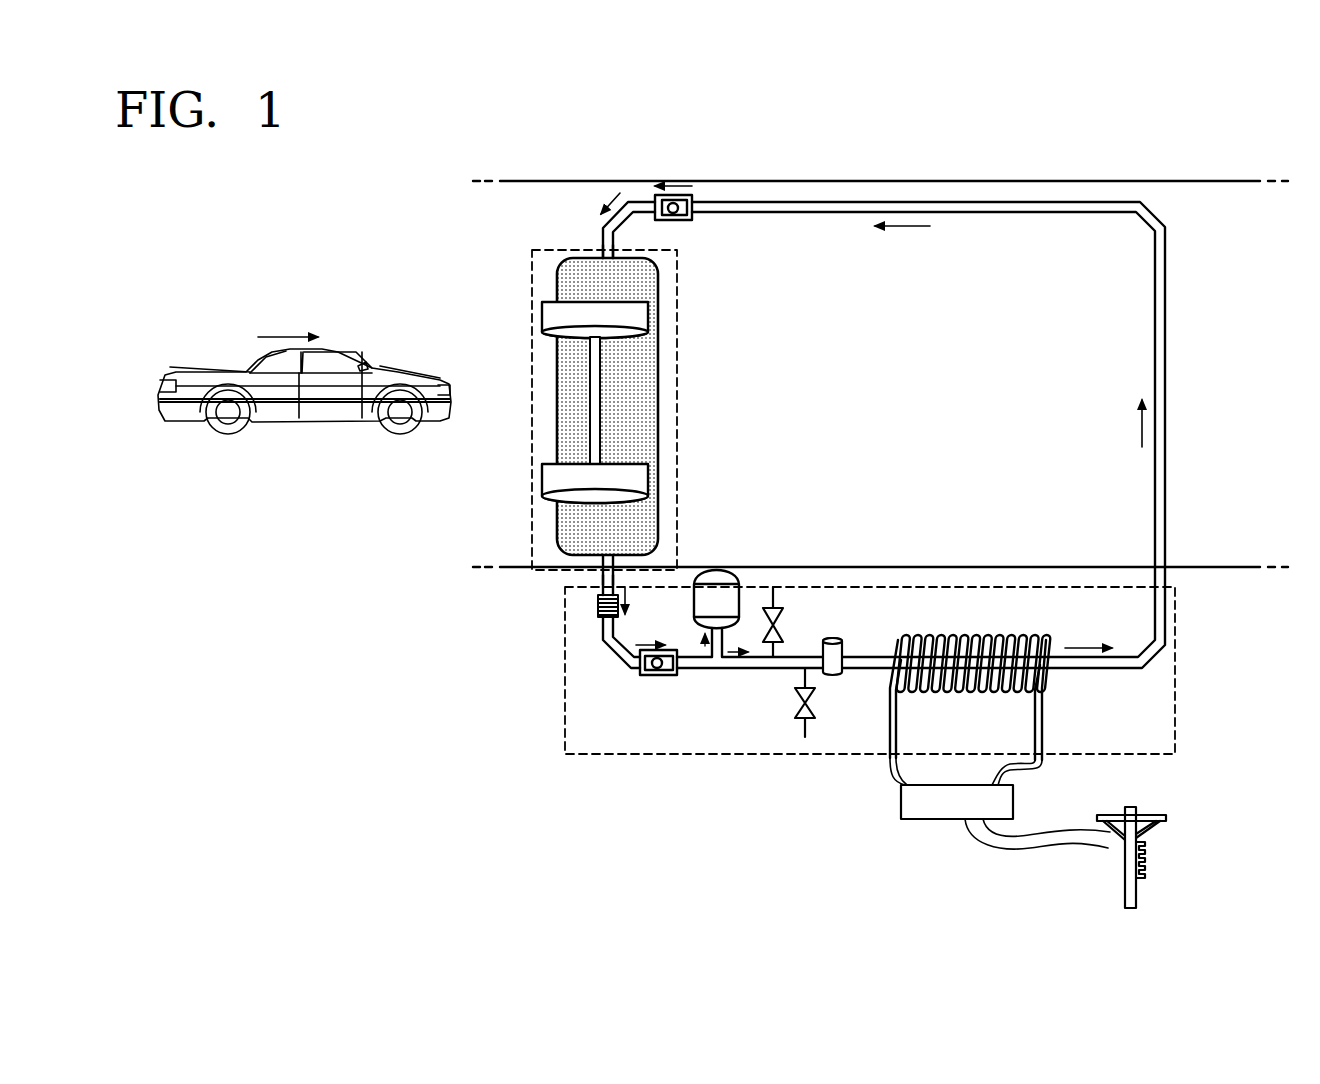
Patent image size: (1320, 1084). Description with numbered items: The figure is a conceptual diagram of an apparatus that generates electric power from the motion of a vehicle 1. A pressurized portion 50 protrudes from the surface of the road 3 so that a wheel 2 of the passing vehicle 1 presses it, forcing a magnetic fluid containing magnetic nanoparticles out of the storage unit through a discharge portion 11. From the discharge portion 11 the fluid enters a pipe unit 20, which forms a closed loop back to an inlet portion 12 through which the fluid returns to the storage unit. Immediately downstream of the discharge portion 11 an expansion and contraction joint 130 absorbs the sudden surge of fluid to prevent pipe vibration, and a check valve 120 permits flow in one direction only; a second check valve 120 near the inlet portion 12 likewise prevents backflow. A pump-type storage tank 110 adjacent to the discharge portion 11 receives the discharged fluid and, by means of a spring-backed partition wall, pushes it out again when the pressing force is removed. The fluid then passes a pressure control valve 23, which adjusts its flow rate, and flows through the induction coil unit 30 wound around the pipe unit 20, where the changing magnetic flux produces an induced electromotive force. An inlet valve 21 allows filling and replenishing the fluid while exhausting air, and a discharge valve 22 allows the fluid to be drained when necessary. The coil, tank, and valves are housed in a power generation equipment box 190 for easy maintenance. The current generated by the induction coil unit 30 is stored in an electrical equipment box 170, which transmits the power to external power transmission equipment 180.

The vehicle 1 is at (290, 446).
The wheel 2 is at (545, 321).
The road 3 is at (1113, 180).
The discharge portion 11 is at (600, 576).
The inlet portion 12 is at (602, 242).
The pipe unit 20 is at (1160, 298).
The inlet valve 21 is at (785, 617).
The discharge valve 22 is at (798, 698).
The pressure control valve 23 is at (838, 645).
The induction coil unit 30 is at (1025, 635).
The pressurized portion 50 is at (655, 408).
The pump-type storage tank 110 is at (735, 572).
The check valve 120 is at (688, 221).
The expansion and contraction joint 130 is at (598, 608).
The electrical equipment box 170 is at (900, 798).
The power transmission equipment 180 is at (1156, 840).
The power generation equipment box 190 is at (600, 756).